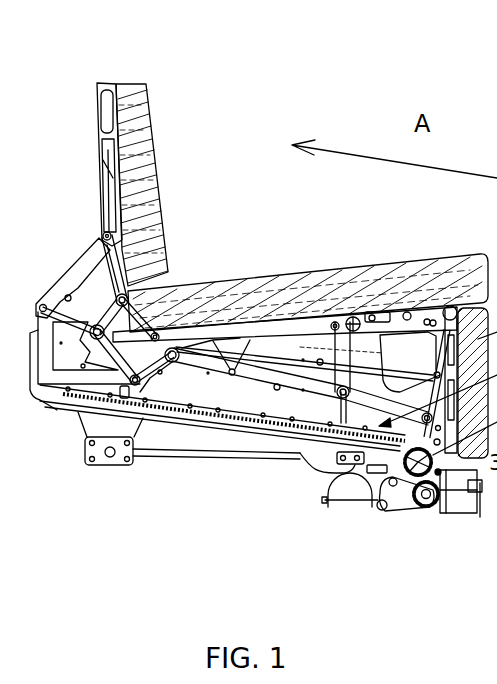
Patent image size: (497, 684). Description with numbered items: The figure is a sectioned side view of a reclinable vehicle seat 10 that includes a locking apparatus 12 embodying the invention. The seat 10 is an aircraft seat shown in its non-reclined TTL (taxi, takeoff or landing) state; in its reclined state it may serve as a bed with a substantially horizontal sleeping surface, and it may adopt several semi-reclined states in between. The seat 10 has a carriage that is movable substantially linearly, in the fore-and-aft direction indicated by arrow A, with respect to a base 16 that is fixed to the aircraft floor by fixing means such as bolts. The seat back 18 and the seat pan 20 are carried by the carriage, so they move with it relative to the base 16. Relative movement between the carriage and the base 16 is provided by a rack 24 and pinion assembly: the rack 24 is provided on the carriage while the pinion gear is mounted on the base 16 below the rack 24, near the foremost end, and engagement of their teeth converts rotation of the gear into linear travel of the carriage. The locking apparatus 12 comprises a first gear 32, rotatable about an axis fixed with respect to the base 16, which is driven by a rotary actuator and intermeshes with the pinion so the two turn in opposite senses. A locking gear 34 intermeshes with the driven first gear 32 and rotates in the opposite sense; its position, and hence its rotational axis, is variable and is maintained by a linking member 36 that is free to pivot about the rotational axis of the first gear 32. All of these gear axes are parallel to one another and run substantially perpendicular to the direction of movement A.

The vehicle seat 10 is at (192, 107).
The locking apparatus 12 is at (412, 511).
The base 16 is at (182, 432).
The seat back 18 is at (148, 218).
The seat pan 20 is at (350, 277).
The rack 24 is at (258, 428).
The first gear 32 is at (393, 472).
The locking gear 34 is at (437, 508).
The linking member 36 is at (395, 507).